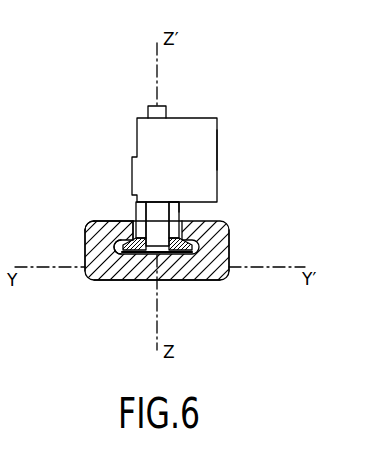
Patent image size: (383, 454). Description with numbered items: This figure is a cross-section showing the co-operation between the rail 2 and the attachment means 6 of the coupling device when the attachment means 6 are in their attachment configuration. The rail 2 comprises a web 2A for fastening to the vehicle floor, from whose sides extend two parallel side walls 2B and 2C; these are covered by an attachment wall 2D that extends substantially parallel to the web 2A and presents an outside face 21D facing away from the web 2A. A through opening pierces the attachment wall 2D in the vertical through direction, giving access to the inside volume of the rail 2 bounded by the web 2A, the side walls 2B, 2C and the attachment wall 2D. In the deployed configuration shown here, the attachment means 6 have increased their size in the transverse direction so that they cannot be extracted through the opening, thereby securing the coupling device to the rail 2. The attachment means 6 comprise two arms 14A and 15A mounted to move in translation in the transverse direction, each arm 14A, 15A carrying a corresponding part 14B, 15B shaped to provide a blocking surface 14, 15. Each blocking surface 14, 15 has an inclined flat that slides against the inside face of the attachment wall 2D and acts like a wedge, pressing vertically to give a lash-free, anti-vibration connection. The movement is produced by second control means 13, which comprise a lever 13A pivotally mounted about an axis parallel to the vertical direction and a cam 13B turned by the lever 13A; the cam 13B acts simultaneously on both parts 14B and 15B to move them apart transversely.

The rail 2 is at (229, 274).
The web 2A is at (118, 280).
The side wall 2B is at (85, 232).
The side wall 2C is at (226, 240).
The attachment wall 2D is at (96, 228).
The outside face 21D is at (97, 221).
The attachment means 6 is at (168, 258).
The second control means 13 is at (218, 123).
The lever 13A is at (218, 147).
The cam 13B is at (163, 252).
The first blocking surface 14 is at (92, 252).
The arm 14A is at (134, 221).
The part 14B is at (112, 256).
The blocking surface 15 is at (186, 224).
The arm 15A is at (180, 205).
The part 15B is at (190, 253).